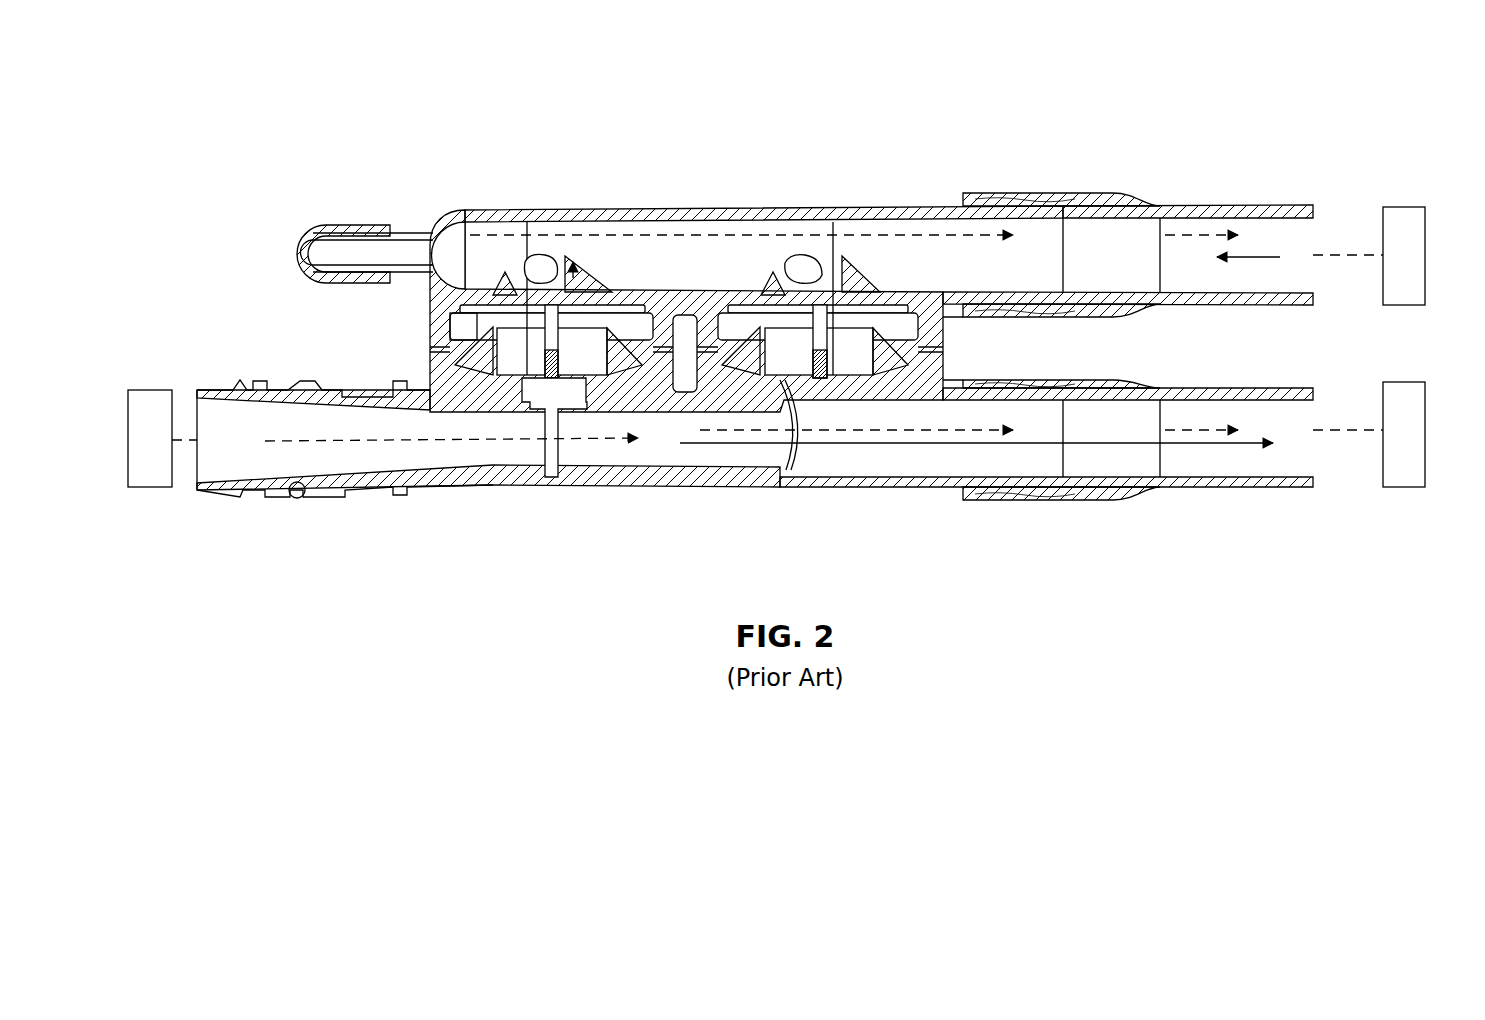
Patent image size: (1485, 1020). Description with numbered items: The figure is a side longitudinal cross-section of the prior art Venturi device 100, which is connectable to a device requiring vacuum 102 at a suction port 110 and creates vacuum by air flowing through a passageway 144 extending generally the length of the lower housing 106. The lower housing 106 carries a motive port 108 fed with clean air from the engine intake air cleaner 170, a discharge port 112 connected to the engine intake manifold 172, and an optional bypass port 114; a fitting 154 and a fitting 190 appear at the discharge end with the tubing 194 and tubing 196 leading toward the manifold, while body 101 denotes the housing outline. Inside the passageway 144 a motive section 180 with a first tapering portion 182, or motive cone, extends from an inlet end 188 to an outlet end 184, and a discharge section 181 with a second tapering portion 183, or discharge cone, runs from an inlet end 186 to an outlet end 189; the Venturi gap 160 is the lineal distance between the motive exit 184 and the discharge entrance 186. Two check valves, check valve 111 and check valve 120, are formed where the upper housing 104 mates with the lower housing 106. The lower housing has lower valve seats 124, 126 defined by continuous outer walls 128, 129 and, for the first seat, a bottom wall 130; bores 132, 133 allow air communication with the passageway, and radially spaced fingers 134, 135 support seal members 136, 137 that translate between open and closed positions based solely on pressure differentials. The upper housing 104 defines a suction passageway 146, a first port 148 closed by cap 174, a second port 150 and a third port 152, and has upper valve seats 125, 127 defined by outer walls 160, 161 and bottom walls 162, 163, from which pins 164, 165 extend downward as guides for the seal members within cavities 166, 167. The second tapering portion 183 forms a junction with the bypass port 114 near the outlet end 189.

The Venturi device 100 is at (368, 82).
The housing body 101 is at (443, 222).
The device requiring vacuum 102 is at (1418, 207).
The upper housing 104 is at (752, 208).
The lower housing 106 is at (440, 472).
The motive port 108 is at (197, 400).
The suction port 110 is at (490, 410).
The check valve 111 is at (605, 266).
The discharge port 112 is at (1075, 487).
The bypass port 114 is at (792, 405).
The check valve 120 is at (868, 266).
The lower valve seat 124 is at (440, 380).
The upper valve seat 125 is at (700, 290).
The lower valve seat 126 is at (962, 383).
The upper valve seat 127 is at (925, 305).
The continuous outer wall 128 is at (692, 428).
The continuous outer wall 129 is at (878, 385).
The bottom wall 130 is at (520, 472).
The bore 132 is at (625, 442).
The bore 133 is at (860, 480).
The radially spaced fingers 134 is at (440, 350).
The radially spaced fingers 135 is at (882, 305).
The seal member 136 is at (466, 215).
The seal member 137 is at (770, 288).
The passageway 144 is at (460, 480).
The suction passageway 146 is at (790, 228).
The first port 148 is at (303, 240).
The second port 150 is at (522, 232).
The third port 152 is at (800, 262).
The upper fitting 154 is at (1075, 193).
The Venturi gap 160 is at (452, 325).
The continuous outer wall 161 is at (952, 335).
The bottom wall 162 is at (552, 250).
The bottom wall 163 is at (852, 285).
The pin 164 is at (518, 318).
The pin 165 is at (840, 390).
The cavity 166 is at (633, 326).
The cavity 167 is at (922, 380).
The engine intake air cleaner 170 is at (152, 488).
The engine intake manifold 172 is at (1418, 487).
The cap 174 is at (345, 225).
The motive section 180 is at (293, 392).
The discharge section 181 is at (728, 472).
The first tapering portion 182 is at (297, 497).
The second tapering portion 183 is at (775, 462).
The outlet end 184 is at (560, 478).
The inlet end 186 is at (638, 480).
The inlet end 188 is at (235, 490).
The outlet end 189 is at (800, 485).
The discharge section 190 is at (960, 490).
The outlet lumen 194 is at (1140, 470).
The inlet lumen 196 is at (1137, 228).